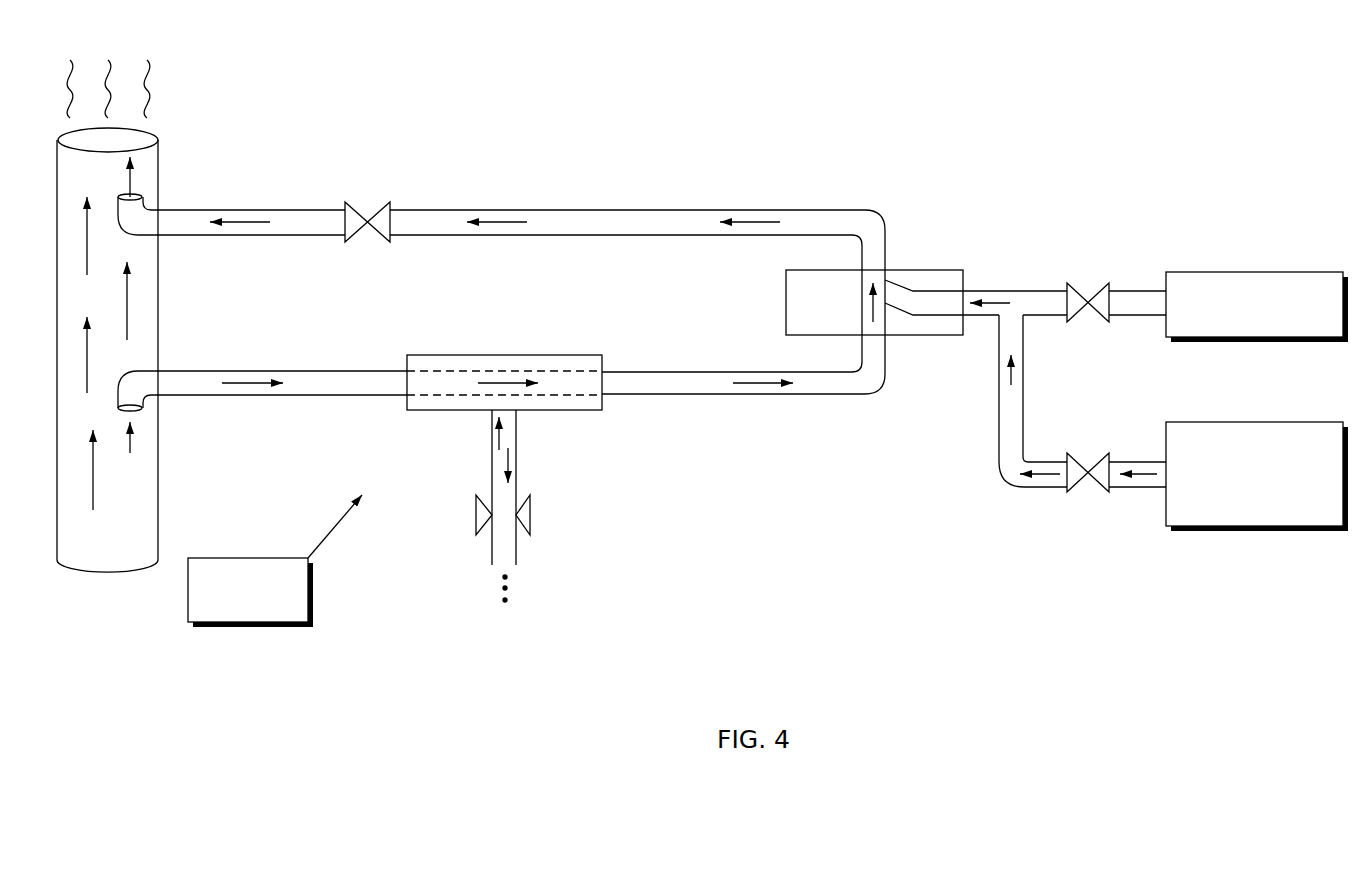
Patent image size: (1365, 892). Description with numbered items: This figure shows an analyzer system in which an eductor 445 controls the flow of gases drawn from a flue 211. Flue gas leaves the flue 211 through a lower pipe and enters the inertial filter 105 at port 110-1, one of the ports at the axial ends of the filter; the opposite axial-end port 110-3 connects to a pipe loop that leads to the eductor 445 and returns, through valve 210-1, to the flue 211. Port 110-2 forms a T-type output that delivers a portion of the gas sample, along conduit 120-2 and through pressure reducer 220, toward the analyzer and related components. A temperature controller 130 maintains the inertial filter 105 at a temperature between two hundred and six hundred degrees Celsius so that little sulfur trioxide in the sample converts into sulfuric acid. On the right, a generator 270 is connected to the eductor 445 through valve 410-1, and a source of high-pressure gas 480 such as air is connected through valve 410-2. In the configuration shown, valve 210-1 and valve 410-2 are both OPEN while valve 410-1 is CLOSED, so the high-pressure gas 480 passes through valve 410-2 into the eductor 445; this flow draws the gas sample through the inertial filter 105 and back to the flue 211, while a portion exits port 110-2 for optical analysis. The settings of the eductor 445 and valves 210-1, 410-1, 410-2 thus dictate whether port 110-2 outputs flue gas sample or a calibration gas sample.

The flue 211 is at (103, 572).
The valve 210-1 is at (353, 237).
The port 110-3 is at (607, 383).
The port 110-1 is at (400, 383).
The inertial filter 105 is at (490, 355).
The port 110-2 is at (492, 440).
The conduit 120-2 is at (492, 483).
The pressure reducer 220 is at (532, 512).
The temperature controller 130 is at (258, 628).
The eductor 445 is at (786, 296).
The valve 410-1 is at (1074, 286).
The generator 270 is at (1243, 272).
The valve 410-2 is at (1075, 456).
The high-pressure gas 480 is at (1245, 422).